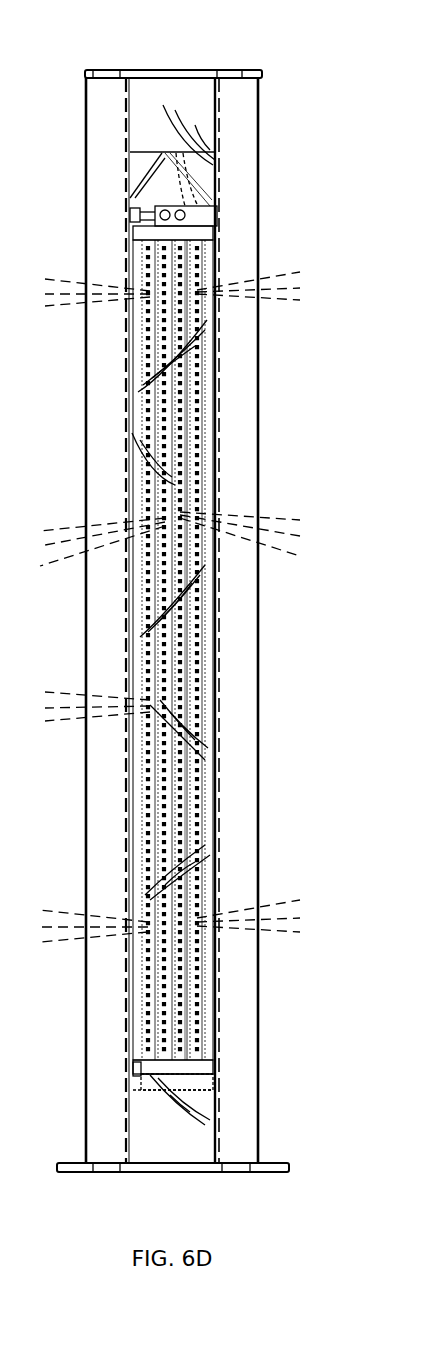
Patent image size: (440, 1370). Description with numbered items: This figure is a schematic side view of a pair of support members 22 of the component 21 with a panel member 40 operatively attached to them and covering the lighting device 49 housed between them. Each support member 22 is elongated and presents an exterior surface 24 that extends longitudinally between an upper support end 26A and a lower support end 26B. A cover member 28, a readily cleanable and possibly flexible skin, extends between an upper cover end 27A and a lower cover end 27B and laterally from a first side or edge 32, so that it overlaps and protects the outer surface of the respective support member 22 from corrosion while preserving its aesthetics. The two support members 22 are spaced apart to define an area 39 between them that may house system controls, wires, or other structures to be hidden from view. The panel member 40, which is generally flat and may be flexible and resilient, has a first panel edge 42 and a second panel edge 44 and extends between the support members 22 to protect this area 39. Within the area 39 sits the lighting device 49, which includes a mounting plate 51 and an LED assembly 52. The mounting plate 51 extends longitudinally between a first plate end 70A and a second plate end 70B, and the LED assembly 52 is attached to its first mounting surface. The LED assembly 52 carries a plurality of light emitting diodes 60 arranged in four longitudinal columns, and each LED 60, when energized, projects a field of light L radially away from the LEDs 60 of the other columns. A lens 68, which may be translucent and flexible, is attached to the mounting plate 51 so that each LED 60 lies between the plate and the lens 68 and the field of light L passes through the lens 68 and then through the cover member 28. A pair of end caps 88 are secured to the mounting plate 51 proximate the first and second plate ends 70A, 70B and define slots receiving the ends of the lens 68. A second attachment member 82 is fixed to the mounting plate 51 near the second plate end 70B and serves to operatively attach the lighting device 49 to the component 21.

The component 21 is at (285, 60).
The support member 22 is at (100, 812).
The exterior surface 24 is at (98, 626).
The upper support end 26A is at (121, 70).
The lower support end 26B is at (120, 1172).
The upper cover end 27A is at (93, 70).
The lower cover end 27B is at (93, 1172).
The cover member 28 is at (100, 175).
The first side or edge 32 is at (106, 259).
The area 39 is at (130, 405).
The panel member 40 is at (206, 357).
The first panel edge 42 is at (128, 657).
The second panel edge 44 is at (218, 670).
The lighting device 49 is at (150, 857).
The mounting plate 51 is at (205, 710).
The LED assembly 52 is at (132, 745).
The light emitting diode 60 is at (148, 957).
The lens 68 is at (190, 422).
The first plate end 70A is at (215, 258).
The second plate end 70B is at (138, 1058).
The second attachment member 82 is at (200, 1082).
The end cap 88 is at (203, 236).
The field of light L is at (289, 276).